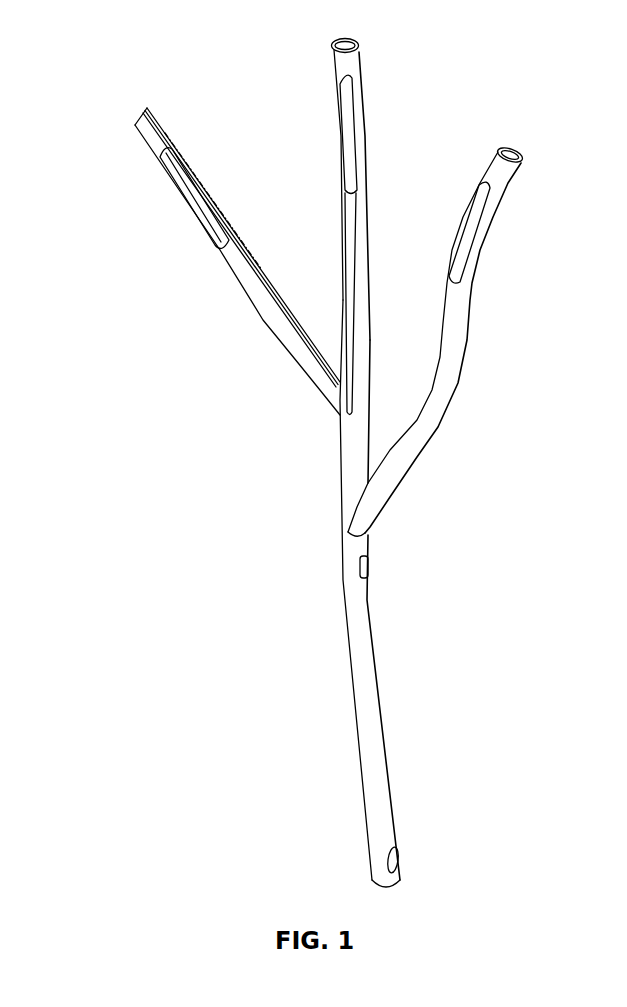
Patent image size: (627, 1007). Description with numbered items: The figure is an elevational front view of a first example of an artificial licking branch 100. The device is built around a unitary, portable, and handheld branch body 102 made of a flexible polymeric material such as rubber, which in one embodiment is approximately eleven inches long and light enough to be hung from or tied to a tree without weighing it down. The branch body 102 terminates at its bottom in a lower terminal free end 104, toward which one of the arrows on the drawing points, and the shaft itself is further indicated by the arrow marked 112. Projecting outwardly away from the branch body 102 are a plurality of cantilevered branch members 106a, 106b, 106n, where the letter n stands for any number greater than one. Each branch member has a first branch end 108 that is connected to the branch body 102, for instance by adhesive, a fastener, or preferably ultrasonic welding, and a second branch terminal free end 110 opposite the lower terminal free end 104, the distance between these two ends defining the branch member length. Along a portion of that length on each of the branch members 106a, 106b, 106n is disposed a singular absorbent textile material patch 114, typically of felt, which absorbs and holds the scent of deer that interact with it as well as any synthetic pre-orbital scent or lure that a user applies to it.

The artificial licking branch 100 is at (203, 524).
The branch body 102 is at (393, 688).
The lower terminal free end 104 is at (362, 875).
The cantilevered branch member 106a is at (432, 423).
The cantilevered branch member 106b is at (350, 75).
The cantilevered branch member 106n is at (275, 322).
The first branch end 108 is at (373, 540).
The second branch terminal free end 110 is at (372, 44).
The shaft wall 112 is at (350, 681).
The absorbent textile material patch 114 is at (347, 165).